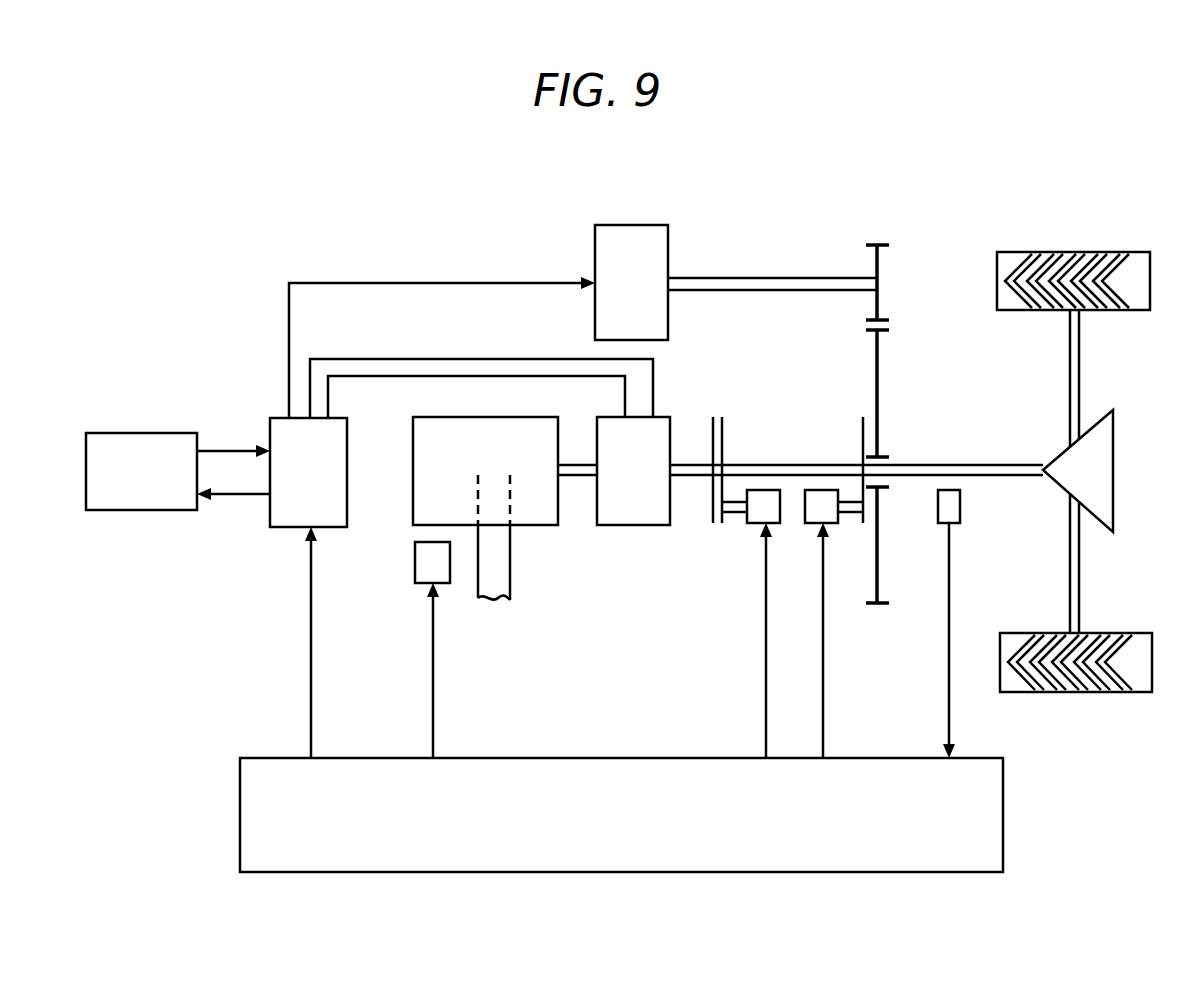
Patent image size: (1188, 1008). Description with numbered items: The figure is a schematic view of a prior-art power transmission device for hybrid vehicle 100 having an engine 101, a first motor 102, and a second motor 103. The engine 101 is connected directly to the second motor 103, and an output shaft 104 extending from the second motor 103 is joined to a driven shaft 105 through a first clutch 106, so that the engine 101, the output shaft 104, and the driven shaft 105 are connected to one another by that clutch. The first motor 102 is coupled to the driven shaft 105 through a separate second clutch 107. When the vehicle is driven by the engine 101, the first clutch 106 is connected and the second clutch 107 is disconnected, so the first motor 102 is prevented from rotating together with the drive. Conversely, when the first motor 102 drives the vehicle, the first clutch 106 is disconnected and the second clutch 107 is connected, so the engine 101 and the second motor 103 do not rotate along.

The power transmission device for hybrid vehicle 100 is at (1128, 200).
The engine 101 is at (440, 417).
The first motor 102 is at (668, 240).
The second motor 103 is at (620, 476).
The output shaft 104 is at (698, 478).
The driven shaft 105 is at (943, 462).
The first clutch 106 is at (712, 400).
The second clutch 107 is at (860, 400).